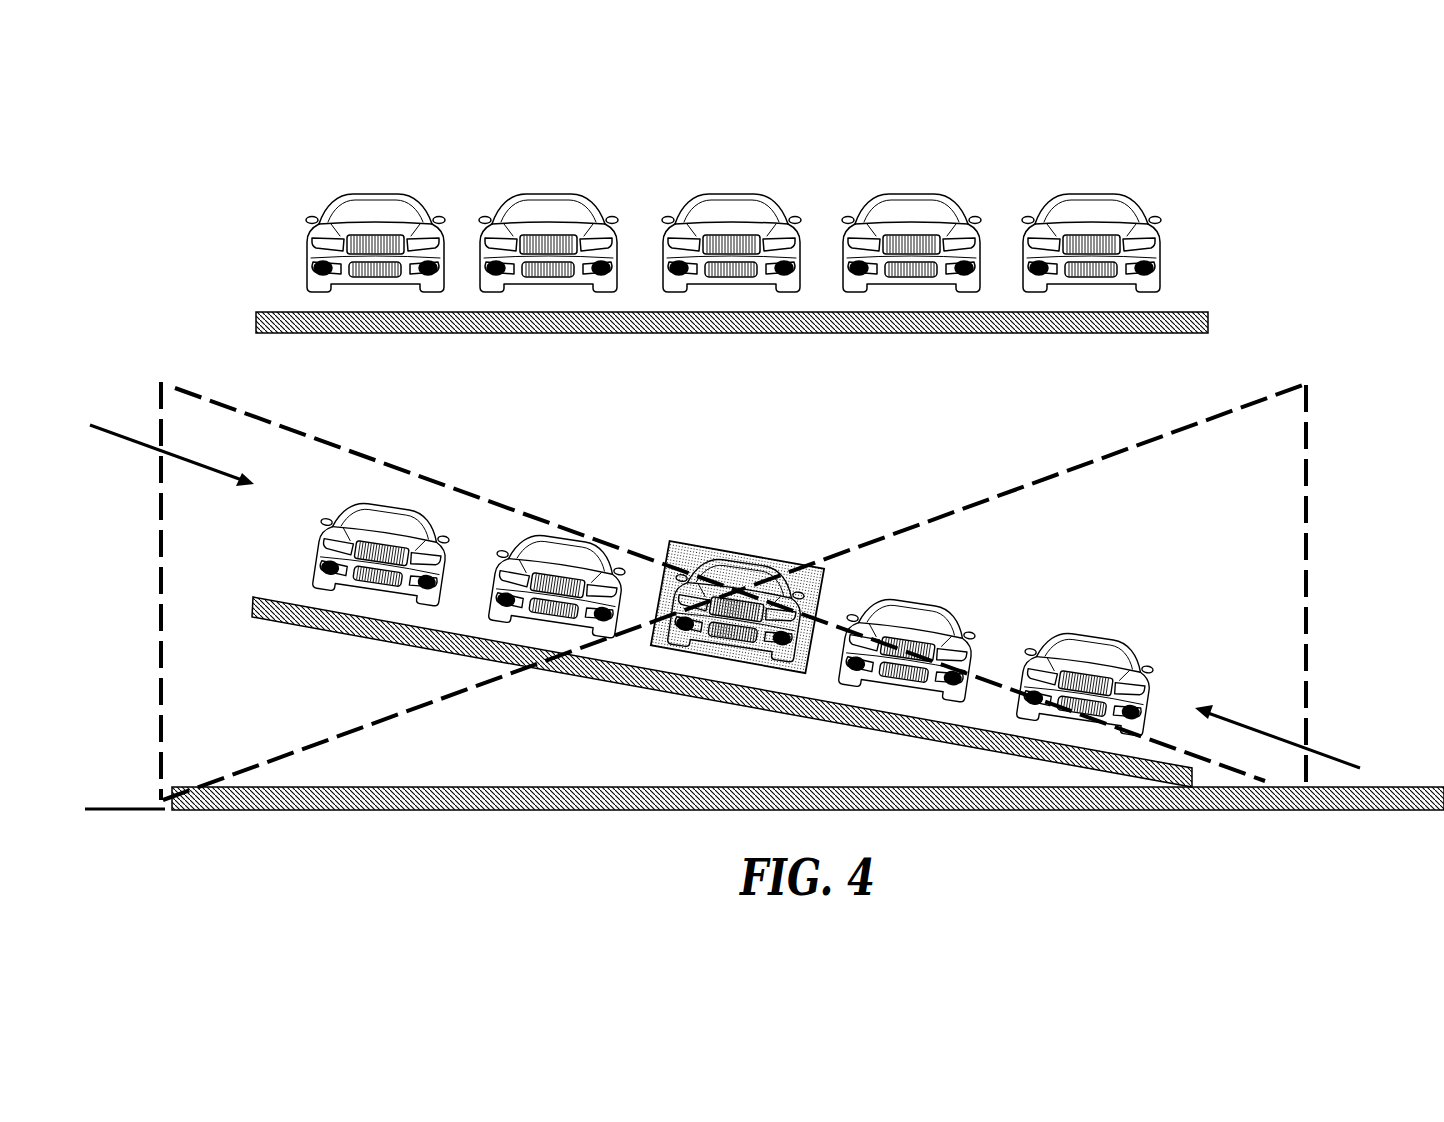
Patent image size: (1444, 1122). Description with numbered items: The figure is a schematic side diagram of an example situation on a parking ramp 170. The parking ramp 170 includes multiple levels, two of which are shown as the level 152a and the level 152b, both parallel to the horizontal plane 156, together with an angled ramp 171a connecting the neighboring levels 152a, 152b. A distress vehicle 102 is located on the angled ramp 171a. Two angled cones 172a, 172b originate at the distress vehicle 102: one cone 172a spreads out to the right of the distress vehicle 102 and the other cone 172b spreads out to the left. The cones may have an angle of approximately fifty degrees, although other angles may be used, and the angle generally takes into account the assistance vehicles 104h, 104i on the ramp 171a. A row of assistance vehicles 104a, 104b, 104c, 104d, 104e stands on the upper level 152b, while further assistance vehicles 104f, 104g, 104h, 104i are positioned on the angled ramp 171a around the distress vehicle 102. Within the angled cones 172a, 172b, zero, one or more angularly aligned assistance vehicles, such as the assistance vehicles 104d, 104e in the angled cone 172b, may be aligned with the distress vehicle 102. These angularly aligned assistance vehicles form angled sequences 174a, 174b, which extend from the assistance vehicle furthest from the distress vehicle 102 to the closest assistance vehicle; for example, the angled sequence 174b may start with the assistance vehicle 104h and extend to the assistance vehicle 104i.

The parking ramp 170 is at (384, 104).
The assistance vehicle 104a is at (334, 206).
The assistance vehicle 104b is at (506, 212).
The assistance vehicle 104c is at (690, 207).
The assistance vehicle 104d is at (954, 212).
The assistance vehicle 104e is at (1128, 206).
The assistance vehicle 104f is at (354, 500).
The assistance vehicle 104g is at (522, 530).
The assistance vehicle 104h is at (964, 624).
The assistance vehicle 104i is at (1140, 656).
The distress vehicle 102 is at (744, 552).
The level 152a is at (1392, 787).
The level 152b is at (1194, 312).
The horizontal plane 156 is at (120, 809).
The angled ramp 171a is at (272, 597).
The angled cone 172a is at (298, 432).
The angled cone 172b is at (1168, 430).
The angled sequence 174a is at (126, 438).
The angled sequence 174b is at (1248, 722).